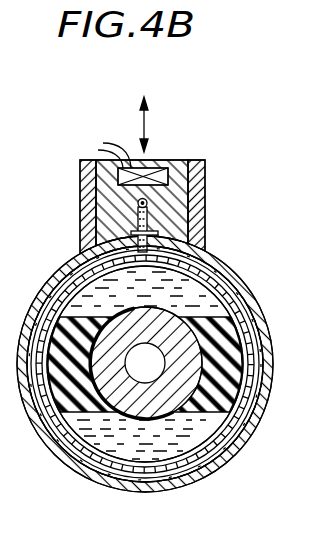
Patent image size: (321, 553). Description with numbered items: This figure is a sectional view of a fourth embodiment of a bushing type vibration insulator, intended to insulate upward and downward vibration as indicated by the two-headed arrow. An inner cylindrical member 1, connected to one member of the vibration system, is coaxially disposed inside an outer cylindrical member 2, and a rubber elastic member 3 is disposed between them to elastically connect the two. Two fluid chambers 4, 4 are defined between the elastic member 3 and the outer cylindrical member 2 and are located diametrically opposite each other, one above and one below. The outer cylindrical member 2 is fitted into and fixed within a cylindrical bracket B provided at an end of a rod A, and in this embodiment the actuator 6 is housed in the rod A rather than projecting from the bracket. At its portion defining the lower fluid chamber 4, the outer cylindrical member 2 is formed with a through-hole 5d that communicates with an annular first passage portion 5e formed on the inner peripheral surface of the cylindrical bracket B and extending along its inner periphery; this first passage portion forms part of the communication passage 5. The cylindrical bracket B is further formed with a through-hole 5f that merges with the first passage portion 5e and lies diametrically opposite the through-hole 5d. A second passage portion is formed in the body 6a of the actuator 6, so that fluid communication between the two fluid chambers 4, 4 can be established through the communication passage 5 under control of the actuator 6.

The inner cylindrical member 1 is at (87, 419).
The outer cylindrical member 2 is at (199, 468).
The elastic member 3 is at (222, 344).
The fluid chamber 4 is at (173, 300).
The communication passage 5 is at (89, 465).
The through-hole 5d is at (147, 466).
The first passage portion 5e is at (115, 478).
The through-hole 5f is at (212, 251).
The actuator 6 is at (96, 182).
The body 6a is at (188, 183).
The rod A is at (205, 213).
The cylindrical bracket B is at (244, 289).